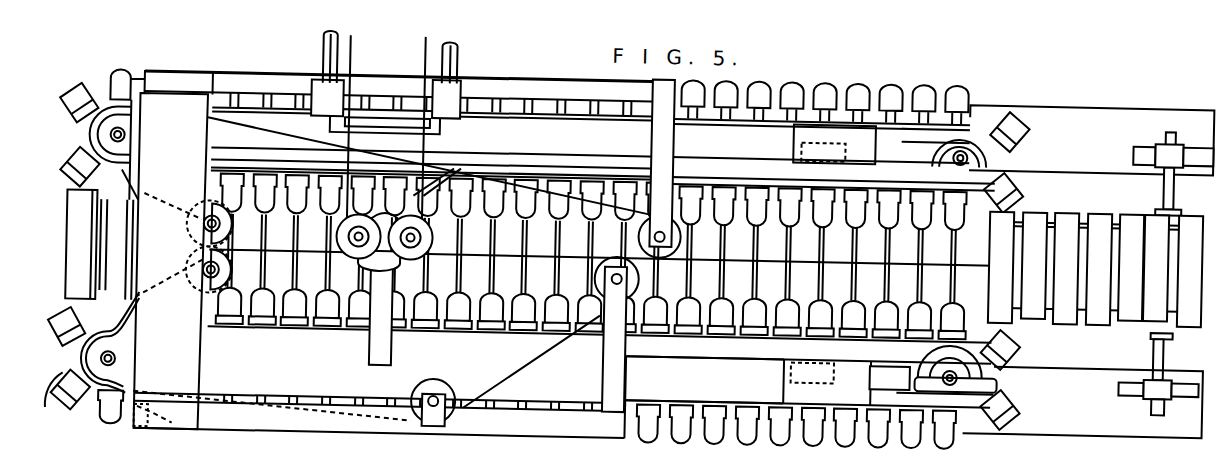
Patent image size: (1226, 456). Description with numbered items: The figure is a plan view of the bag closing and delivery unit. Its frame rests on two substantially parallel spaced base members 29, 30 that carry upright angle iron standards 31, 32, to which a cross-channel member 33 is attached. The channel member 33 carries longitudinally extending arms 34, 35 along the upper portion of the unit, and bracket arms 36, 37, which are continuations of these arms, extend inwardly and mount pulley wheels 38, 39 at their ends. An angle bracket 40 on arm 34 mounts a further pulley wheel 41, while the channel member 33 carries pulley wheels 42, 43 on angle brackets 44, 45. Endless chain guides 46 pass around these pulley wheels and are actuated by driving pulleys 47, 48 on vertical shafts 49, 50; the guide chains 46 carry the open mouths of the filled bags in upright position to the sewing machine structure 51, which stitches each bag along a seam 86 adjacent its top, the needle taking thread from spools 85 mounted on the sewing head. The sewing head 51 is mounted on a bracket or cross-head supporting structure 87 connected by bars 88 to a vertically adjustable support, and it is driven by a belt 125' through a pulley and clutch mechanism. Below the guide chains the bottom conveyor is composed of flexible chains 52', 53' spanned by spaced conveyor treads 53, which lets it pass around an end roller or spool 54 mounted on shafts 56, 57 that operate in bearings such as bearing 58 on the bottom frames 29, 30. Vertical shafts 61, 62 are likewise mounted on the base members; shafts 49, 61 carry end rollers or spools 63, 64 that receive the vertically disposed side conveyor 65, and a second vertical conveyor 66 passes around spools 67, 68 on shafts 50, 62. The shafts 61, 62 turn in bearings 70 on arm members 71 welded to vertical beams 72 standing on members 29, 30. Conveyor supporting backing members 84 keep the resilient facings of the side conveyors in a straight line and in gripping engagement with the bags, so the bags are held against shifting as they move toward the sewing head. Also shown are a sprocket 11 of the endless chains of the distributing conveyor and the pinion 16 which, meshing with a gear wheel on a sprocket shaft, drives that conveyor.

The sprockets 11 is at (900, 179).
The pinion 16 is at (835, 176).
The base member 29 is at (1128, 424).
The base member 30 is at (1117, 97).
The upright angle iron standard 31 is at (271, 422).
The upright angle iron standard 32 is at (152, 80).
The cross-channel member 33 is at (186, 379).
The longitudinally extending arm 34 is at (540, 419).
The longitudinally extending arm 35 is at (562, 83).
The bracket arm 36 is at (617, 393).
The bracket arm 37 is at (661, 141).
The pulley wheel 38 is at (652, 271).
The pulley wheel 39 is at (688, 229).
The angle bracket 40 is at (441, 419).
The pulley wheel 41 is at (451, 386).
The pulley wheel 42 is at (208, 293).
The pulley wheel 43 is at (209, 199).
The angle bracket 44 is at (202, 259).
The angle bracket 45 is at (206, 211).
The endless chain guides 46 is at (496, 249).
The driving pulley 47 is at (64, 371).
The driving pulley 48 is at (90, 145).
The vertical shaft 49 is at (107, 360).
The vertical shaft 50 is at (111, 135).
The sewing machine structure 51 is at (429, 165).
The flexible chain 52' is at (1091, 251).
The conveyor treads 53 is at (1106, 285).
The flexible chain 53' is at (1036, 285).
The end roller or spool 54 is at (87, 244).
The shaft 56 is at (1114, 292).
The shaft 57 is at (1168, 171).
The bearing 58 is at (1182, 135).
The vertical shaft 61 is at (934, 362).
The vertical shaft 62 is at (990, 137).
The end roller or spool 63 is at (95, 412).
The end roller or spool 64 is at (939, 340).
The side conveyor 65 is at (957, 415).
The second vertical conveyor 66 is at (860, 78).
The end roller or spool 67 is at (107, 128).
The end roller or spool 68 is at (1017, 160).
The bearings 70 is at (990, 366).
The arm members 71 is at (807, 116).
The vertical beams 72 is at (704, 392).
The conveyor supporting backing members 84 is at (544, 161).
The spools 85 is at (411, 207).
The seam 86 is at (758, 338).
The cross-head supporting structure 87 is at (467, 90).
The bars 88 is at (458, 53).
The belt 125' is at (386, 133).